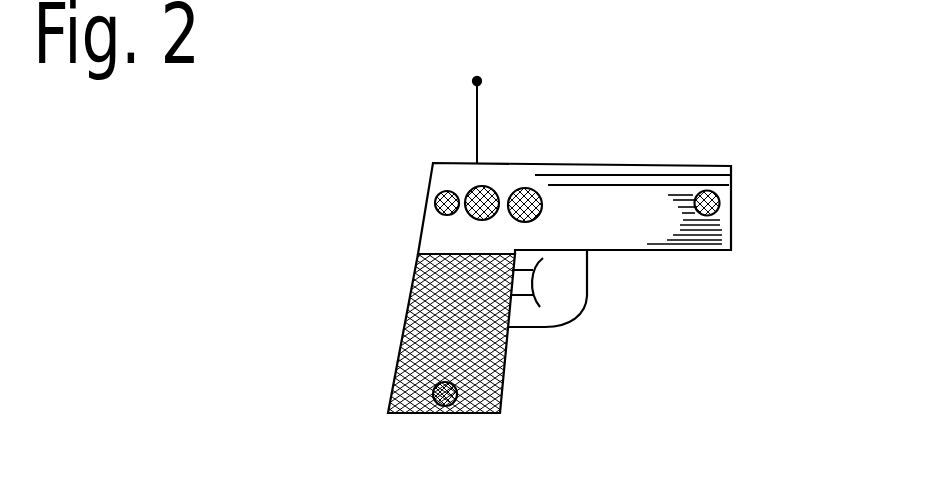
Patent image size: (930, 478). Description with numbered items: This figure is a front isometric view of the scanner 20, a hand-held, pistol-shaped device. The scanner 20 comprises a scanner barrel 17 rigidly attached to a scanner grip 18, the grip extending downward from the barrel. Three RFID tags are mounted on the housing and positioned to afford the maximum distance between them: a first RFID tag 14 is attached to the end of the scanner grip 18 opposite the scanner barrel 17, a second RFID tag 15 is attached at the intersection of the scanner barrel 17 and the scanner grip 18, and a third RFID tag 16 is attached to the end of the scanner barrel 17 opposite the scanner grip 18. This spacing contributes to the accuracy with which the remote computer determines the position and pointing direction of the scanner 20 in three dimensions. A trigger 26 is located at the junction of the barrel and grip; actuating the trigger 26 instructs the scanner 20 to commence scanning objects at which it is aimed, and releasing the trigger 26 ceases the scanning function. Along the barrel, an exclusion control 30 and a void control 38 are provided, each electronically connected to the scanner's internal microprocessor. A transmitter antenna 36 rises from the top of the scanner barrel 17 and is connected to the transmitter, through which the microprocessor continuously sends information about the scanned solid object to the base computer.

The first RFID tag 14 is at (435, 385).
The second RFID tag 15 is at (438, 193).
The third RFID tag 16 is at (704, 191).
The scanner barrel 17 is at (641, 165).
The scanner grip 18 is at (428, 323).
The scanner 20 is at (140, 200).
The trigger 26 is at (537, 302).
The exclusion control 30 is at (486, 188).
The transmitter antenna 36 is at (478, 110).
The void control 38 is at (543, 204).